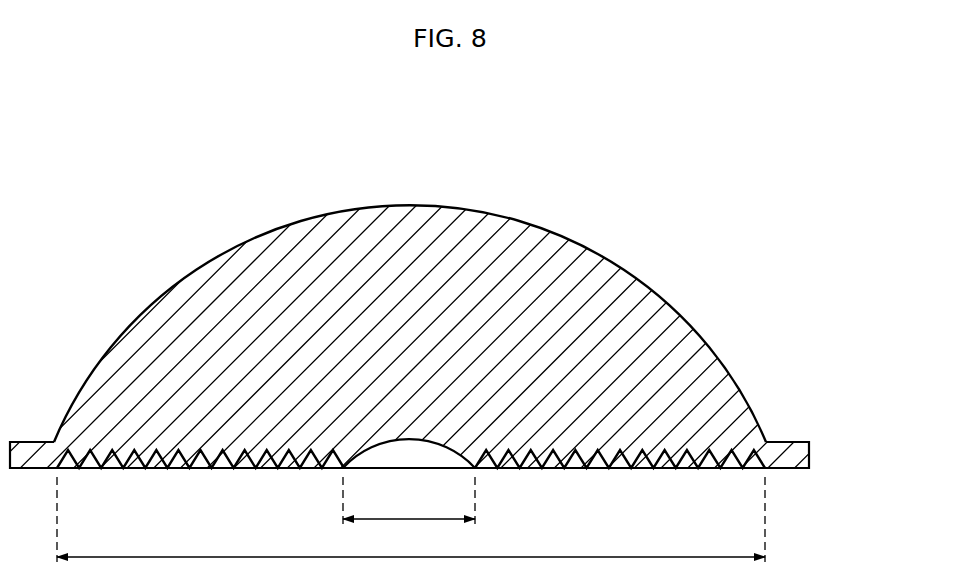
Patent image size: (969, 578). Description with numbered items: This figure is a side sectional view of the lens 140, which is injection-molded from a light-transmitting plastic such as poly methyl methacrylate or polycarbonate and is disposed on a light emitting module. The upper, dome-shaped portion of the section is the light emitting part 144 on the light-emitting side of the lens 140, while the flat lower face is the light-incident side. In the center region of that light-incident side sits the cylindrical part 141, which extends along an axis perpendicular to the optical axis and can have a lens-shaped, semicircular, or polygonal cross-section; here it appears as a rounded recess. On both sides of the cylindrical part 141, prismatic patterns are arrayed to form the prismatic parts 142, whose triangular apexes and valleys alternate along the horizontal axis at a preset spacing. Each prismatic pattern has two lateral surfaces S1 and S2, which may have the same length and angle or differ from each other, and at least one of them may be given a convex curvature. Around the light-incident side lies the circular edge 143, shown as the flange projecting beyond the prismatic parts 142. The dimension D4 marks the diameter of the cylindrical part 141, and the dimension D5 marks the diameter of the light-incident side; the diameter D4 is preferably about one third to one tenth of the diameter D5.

The lens 140 is at (118, 128).
The cylindrical part 141 is at (387, 441).
The prismatic parts 142 is at (590, 452).
The edge 143 is at (794, 459).
The light emitting part 144 is at (713, 349).
The lateral surface S1 is at (557, 468).
The lateral surface S2 is at (568, 468).
The diameter of the cylindrical part D4 is at (409, 502).
The diameter of the light-incident side D5 is at (411, 519).